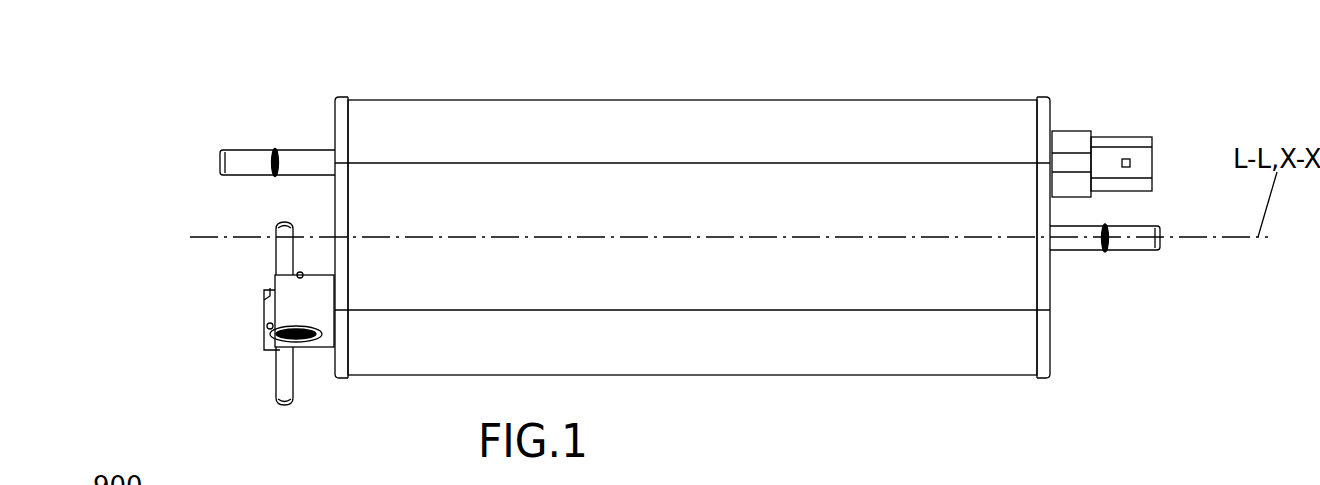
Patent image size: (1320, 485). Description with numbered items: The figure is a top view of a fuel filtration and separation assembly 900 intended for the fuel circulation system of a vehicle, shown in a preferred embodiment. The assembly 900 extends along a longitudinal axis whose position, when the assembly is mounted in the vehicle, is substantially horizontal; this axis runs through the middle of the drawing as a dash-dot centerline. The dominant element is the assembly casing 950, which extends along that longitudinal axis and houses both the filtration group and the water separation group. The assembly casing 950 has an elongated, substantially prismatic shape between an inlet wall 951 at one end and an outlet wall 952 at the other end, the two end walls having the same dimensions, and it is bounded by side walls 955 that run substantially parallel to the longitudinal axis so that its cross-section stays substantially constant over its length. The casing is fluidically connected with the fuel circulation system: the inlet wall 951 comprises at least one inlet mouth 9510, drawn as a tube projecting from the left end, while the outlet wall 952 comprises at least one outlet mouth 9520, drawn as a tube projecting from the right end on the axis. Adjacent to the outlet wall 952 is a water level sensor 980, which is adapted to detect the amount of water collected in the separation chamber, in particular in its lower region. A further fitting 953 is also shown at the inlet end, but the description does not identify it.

The fuel filtration and separation assembly 900 is at (675, 231).
The assembly casing 950 is at (692, 194).
The inlet wall 951 is at (333, 110).
The outlet wall 952 is at (1060, 103).
The valve assembly 953 is at (262, 328).
The side walls 955 is at (660, 143).
The water level sensor 980 is at (1130, 132).
The inlet mouth 9510 is at (302, 160).
The outlet mouth 9520 is at (1085, 243).